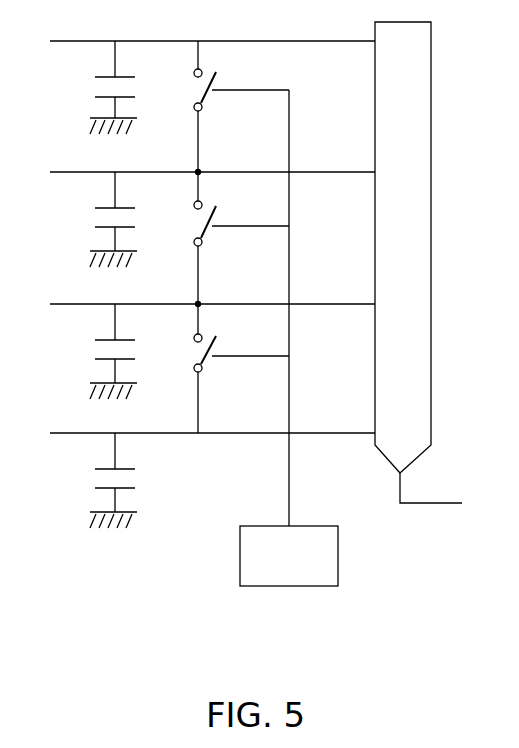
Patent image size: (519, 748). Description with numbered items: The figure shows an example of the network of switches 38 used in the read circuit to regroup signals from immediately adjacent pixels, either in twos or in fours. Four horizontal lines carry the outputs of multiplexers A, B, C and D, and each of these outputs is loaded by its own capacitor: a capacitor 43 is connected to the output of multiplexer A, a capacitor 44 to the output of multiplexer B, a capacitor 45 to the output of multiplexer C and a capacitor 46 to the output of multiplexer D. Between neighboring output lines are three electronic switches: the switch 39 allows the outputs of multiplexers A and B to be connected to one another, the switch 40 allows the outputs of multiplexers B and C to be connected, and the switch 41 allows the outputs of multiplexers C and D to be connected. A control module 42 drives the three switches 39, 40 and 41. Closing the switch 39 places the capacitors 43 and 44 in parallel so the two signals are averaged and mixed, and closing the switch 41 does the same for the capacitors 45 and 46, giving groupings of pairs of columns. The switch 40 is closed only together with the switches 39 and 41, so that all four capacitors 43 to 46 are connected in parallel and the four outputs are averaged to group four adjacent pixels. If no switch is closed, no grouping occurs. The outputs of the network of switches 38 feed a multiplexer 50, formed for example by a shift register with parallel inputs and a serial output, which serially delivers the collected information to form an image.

The network of switches 38 is at (158, 572).
The electronic switch 39 is at (200, 90).
The electronic switch 40 is at (196, 228).
The electronic switch 41 is at (200, 356).
The control module 42 is at (300, 565).
The capacitor 43 is at (93, 86).
The capacitor 44 is at (93, 221).
The capacitor 45 is at (93, 351).
The capacitor 46 is at (93, 480).
The multiplexer 50 is at (424, 192).